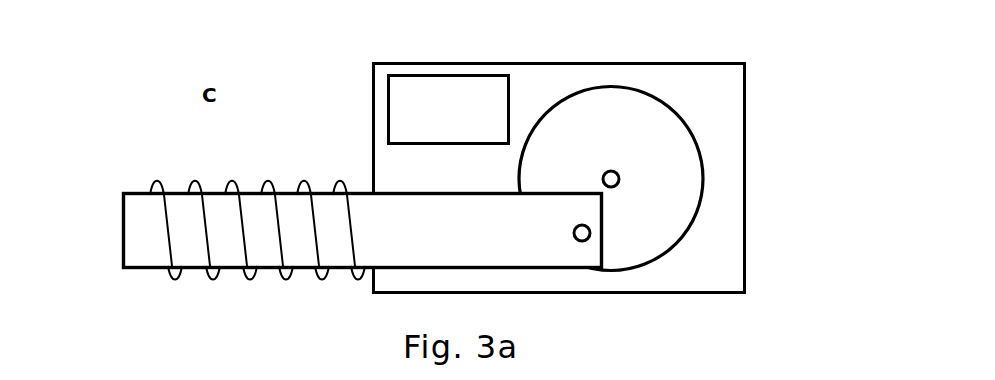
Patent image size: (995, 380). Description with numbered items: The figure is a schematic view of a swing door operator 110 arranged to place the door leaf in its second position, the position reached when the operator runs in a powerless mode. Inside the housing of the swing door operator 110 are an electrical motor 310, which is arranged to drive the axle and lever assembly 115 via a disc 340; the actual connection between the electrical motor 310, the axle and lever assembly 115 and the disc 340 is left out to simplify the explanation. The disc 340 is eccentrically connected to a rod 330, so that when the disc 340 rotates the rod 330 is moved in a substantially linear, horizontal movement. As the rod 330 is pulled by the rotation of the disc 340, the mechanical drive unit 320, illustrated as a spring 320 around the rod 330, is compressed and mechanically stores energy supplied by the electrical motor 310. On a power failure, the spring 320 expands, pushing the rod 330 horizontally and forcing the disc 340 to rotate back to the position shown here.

The swing door operator 110 is at (757, 95).
The axle and lever assembly 115 is at (620, 180).
The electrical motor 310 is at (378, 95).
The mechanical drive unit 320 is at (153, 187).
The rod 330 is at (548, 192).
The disc 340 is at (694, 210).